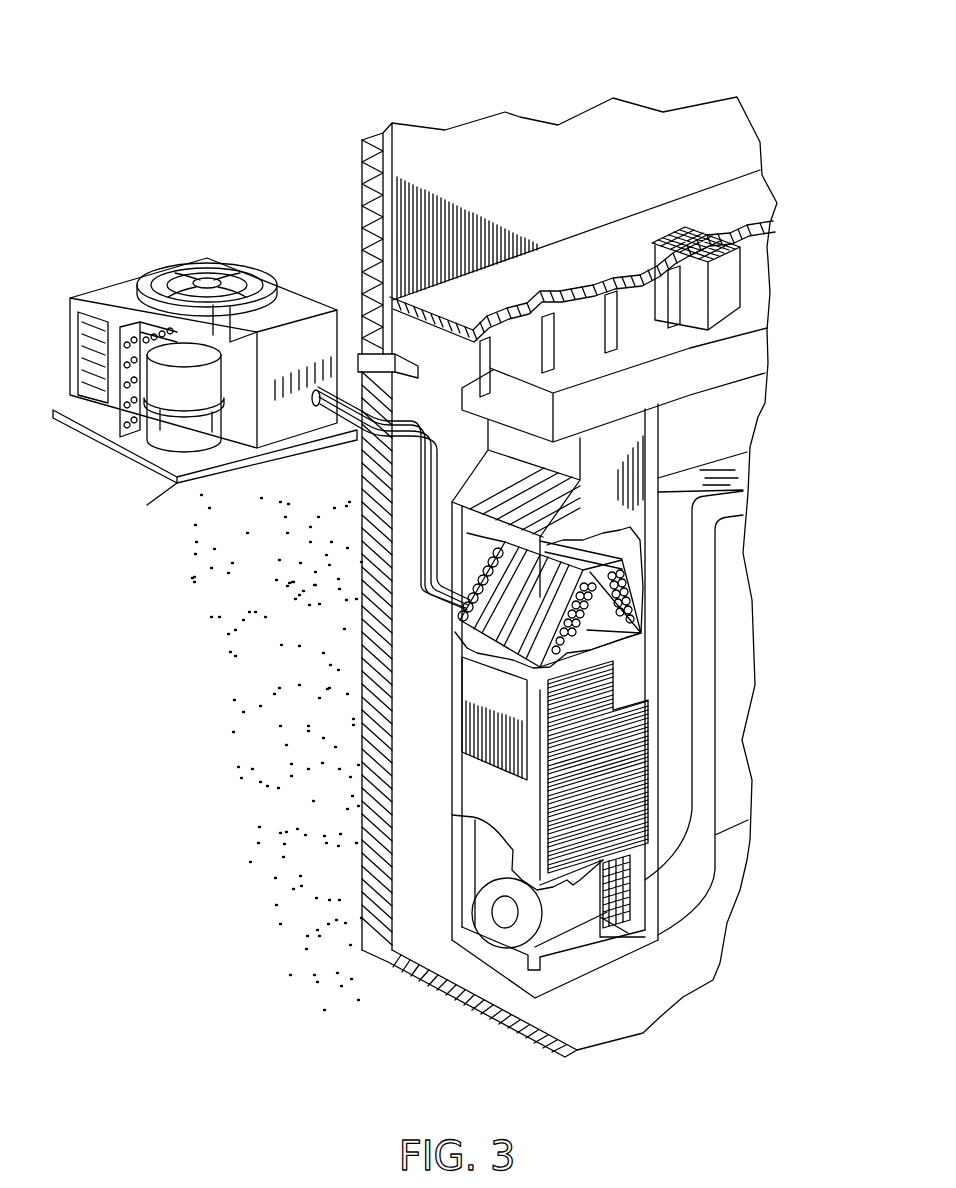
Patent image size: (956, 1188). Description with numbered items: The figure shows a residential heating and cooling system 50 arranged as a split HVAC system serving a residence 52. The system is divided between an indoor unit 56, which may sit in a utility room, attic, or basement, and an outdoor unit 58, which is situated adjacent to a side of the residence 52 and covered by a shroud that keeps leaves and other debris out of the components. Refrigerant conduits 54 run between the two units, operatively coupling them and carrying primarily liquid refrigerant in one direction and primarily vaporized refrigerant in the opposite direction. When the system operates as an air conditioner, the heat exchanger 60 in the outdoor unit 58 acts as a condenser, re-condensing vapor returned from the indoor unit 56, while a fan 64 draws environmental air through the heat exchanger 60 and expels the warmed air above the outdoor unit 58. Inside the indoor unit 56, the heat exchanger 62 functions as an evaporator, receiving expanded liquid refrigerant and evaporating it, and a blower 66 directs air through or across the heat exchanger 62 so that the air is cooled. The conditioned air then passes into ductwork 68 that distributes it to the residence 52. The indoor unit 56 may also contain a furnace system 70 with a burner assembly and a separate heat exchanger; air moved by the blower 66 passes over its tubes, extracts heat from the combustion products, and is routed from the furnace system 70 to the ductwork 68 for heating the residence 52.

The residential heating and cooling system 50 is at (205, 97).
The residence 52 is at (478, 131).
The refrigerant conduits 54 is at (430, 510).
The indoor unit 56 is at (433, 750).
The outdoor unit 58 is at (165, 255).
The heat exchanger 60 is at (140, 330).
The heat exchanger 62 is at (508, 627).
The fan 64 is at (216, 268).
The blower 66 is at (497, 937).
The ductwork 68 is at (718, 317).
The furnace system 70 is at (485, 700).